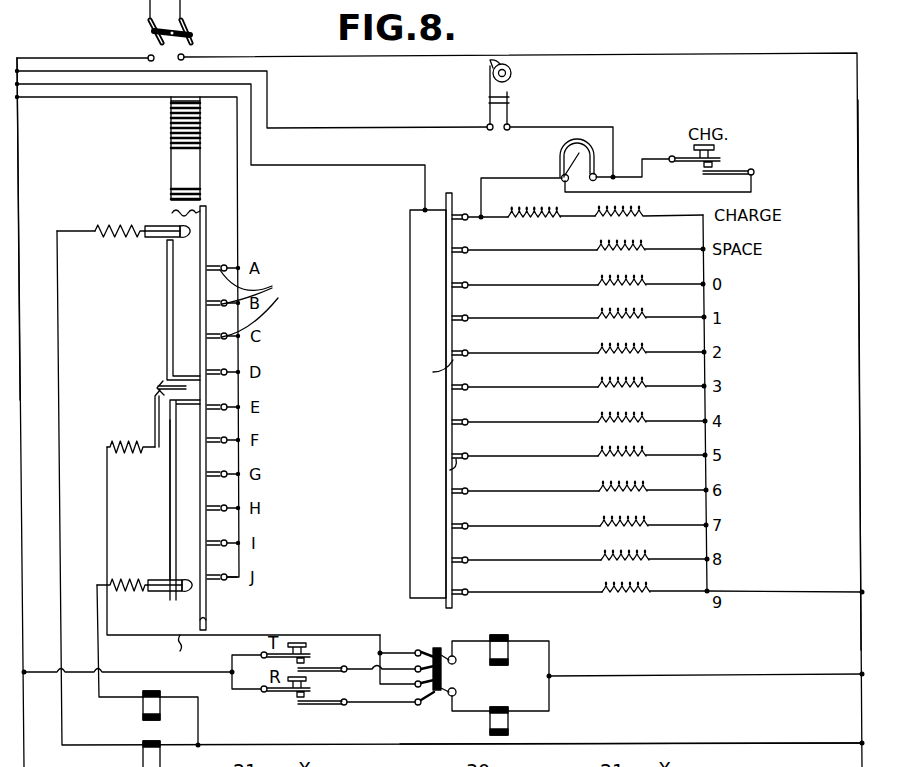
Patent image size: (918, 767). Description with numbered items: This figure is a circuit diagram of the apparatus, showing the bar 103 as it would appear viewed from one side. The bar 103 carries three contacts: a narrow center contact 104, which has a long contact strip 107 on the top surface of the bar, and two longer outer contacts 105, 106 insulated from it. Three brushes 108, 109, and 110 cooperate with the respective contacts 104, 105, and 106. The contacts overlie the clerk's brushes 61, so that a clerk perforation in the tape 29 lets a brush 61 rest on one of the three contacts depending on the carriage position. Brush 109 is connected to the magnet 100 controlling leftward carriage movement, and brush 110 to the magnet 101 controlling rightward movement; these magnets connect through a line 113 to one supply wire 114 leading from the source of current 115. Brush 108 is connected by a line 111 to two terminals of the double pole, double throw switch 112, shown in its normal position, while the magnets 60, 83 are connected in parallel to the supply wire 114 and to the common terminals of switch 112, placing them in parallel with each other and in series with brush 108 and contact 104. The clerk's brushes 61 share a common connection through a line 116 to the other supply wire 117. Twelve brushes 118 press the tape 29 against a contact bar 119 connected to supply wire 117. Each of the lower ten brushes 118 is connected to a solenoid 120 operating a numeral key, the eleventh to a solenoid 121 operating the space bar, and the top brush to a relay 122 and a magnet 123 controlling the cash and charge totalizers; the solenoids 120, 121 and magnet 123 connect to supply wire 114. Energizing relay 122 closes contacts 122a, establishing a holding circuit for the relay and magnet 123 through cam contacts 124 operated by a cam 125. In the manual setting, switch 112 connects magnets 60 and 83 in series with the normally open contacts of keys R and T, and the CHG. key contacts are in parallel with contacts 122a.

The tape 29 is at (212, 608).
The magnet 60 is at (508, 722).
The clerk's brushes 61 is at (259, 303).
The magnet 83 is at (508, 652).
The magnet 100 is at (143, 708).
The magnet 101 is at (143, 758).
The bar 103 is at (172, 138).
The center contact 104 is at (186, 388).
The contact 105 is at (183, 533).
The contact 106 is at (180, 320).
The contact strip 107 is at (170, 490).
The brush 108 is at (153, 413).
The brush 109 is at (160, 592).
The brush 110 is at (152, 238).
The line 111 is at (201, 648).
The double pole, double throw switch 112 is at (455, 676).
The line 113 is at (657, 745).
The supply wire 114 is at (860, 630).
The source of current 115 is at (165, 58).
The line 116 is at (238, 219).
The supply wire 117 is at (17, 160).
The brushes 118 is at (455, 387).
The contact bar 119 is at (410, 330).
The solenoid 120 is at (599, 316).
The solenoid 121 is at (607, 251).
The relay 122 is at (541, 221).
The contacts 122a is at (566, 160).
The magnet 123 is at (607, 218).
The cam contacts 124 is at (497, 90).
The cam 125 is at (512, 73).